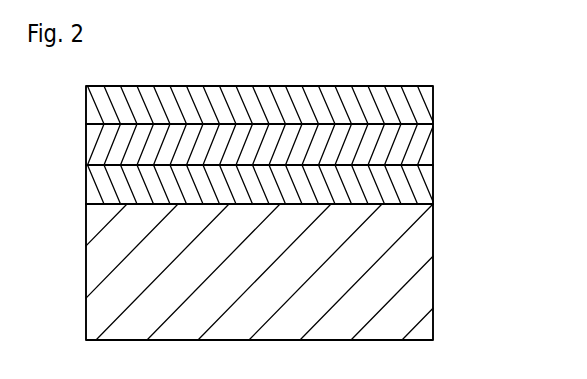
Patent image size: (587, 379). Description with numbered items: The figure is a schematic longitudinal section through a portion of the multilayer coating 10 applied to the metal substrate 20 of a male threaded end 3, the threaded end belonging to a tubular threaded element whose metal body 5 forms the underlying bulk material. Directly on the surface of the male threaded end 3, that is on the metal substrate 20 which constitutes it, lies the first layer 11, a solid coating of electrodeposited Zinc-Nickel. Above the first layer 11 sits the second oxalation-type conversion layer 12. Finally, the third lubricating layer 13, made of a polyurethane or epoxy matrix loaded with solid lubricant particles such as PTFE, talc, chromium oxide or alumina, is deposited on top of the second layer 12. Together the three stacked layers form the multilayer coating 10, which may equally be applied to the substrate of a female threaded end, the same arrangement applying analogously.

The multilayer coating 10 is at (72, 86).
The third lubricating layer 13 is at (420, 104).
The second oxalation-type conversion layer 12 is at (415, 146).
The first layer 11 is at (420, 185).
The metal substrate 20 is at (408, 214).
The male threaded end 3 is at (352, 220).
The metal body 5 is at (407, 305).